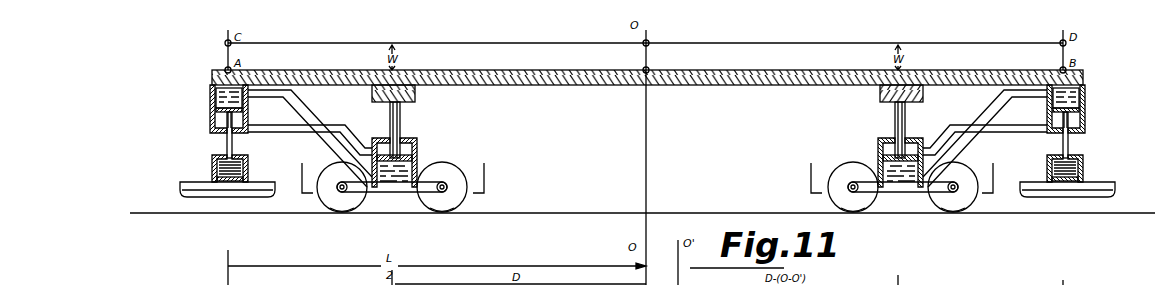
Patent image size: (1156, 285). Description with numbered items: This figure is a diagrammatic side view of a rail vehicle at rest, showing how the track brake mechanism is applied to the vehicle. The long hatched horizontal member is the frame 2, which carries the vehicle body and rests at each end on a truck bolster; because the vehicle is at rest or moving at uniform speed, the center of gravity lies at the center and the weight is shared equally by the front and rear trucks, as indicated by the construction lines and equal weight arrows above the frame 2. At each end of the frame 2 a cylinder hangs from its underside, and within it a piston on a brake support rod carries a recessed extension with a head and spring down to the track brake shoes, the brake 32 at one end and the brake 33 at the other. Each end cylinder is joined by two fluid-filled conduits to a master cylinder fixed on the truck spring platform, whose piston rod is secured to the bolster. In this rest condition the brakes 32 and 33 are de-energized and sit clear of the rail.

The frame 2 is at (578, 88).
The track brake shoe 32 is at (192, 192).
The track brake 33 is at (1103, 192).